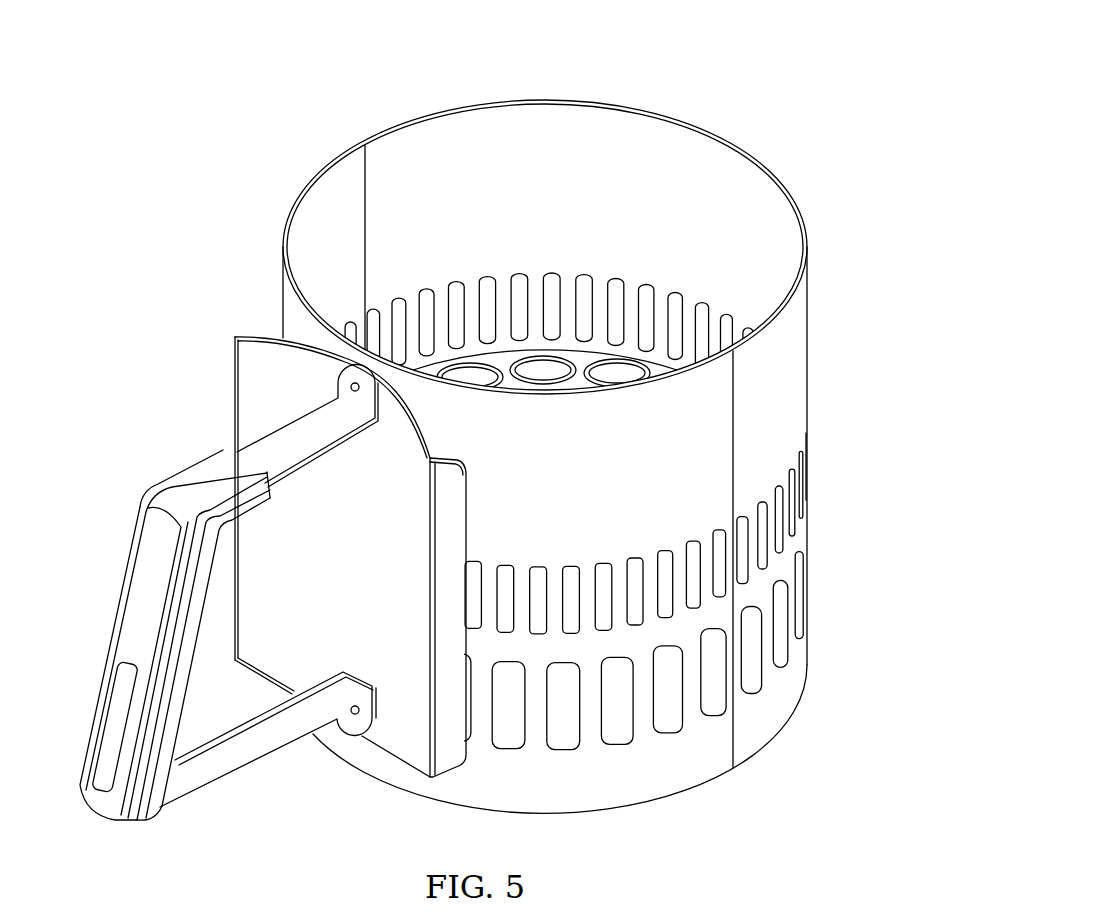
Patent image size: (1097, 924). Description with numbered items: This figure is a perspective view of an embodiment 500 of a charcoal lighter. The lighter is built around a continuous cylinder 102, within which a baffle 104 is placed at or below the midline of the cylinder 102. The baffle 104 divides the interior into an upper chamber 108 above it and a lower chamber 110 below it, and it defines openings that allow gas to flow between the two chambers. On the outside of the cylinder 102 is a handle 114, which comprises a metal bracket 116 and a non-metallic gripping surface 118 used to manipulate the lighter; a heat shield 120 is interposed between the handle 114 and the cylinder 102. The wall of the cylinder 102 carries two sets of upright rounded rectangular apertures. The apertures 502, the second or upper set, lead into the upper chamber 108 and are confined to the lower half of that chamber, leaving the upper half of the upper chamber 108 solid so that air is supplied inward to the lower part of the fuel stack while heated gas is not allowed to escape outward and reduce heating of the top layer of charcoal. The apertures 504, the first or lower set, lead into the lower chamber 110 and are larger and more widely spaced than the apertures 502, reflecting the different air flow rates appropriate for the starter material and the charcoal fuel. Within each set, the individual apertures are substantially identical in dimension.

The embodiment 500 is at (703, 67).
The continuous cylinder 102 is at (568, 100).
The baffle 104 is at (567, 398).
The upper chamber 108 is at (443, 153).
The lower chamber 110 is at (688, 812).
The handle 114 is at (247, 763).
The metal bracket 116 is at (313, 423).
The non-metallic gripping surface 118 is at (146, 550).
The heat shield 120 is at (243, 414).
The apertures 502 is at (574, 566).
The apertures 504 is at (616, 748).